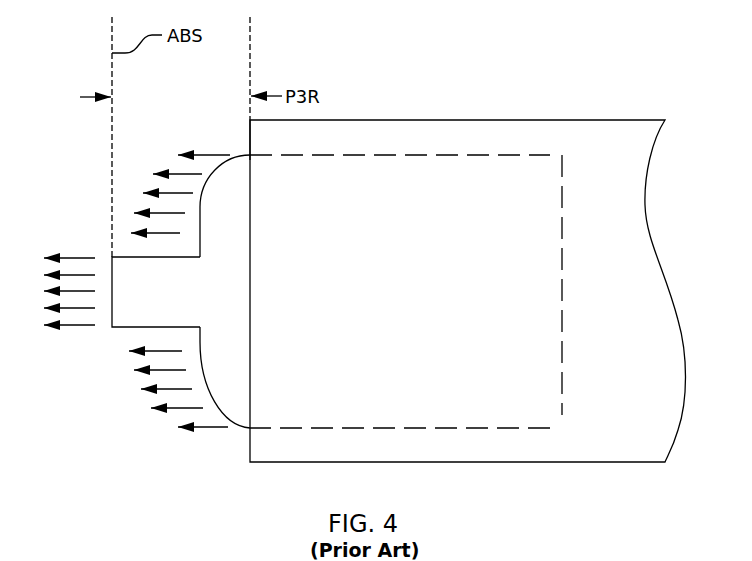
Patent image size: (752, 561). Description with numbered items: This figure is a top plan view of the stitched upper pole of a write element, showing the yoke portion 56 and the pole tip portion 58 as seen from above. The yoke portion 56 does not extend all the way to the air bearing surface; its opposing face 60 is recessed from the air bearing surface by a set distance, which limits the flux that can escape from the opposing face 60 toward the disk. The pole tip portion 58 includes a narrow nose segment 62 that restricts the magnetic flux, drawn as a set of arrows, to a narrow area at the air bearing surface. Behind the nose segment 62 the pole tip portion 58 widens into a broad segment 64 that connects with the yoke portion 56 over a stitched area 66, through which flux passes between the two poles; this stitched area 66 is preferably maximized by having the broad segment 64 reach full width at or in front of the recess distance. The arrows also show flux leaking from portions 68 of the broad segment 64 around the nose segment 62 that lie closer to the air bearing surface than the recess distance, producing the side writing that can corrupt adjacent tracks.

The yoke portion 56 is at (651, 233).
The pole tip portion 58 is at (372, 155).
The opposing face 60 is at (249, 135).
The nose segment 62 is at (154, 305).
The broad segment 64 is at (237, 231).
The stitched area 66 is at (431, 291).
The portions of the broad segment 68 is at (244, 428).